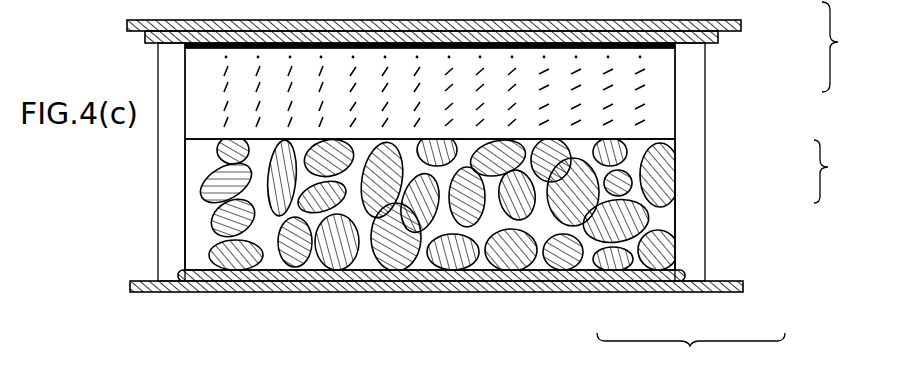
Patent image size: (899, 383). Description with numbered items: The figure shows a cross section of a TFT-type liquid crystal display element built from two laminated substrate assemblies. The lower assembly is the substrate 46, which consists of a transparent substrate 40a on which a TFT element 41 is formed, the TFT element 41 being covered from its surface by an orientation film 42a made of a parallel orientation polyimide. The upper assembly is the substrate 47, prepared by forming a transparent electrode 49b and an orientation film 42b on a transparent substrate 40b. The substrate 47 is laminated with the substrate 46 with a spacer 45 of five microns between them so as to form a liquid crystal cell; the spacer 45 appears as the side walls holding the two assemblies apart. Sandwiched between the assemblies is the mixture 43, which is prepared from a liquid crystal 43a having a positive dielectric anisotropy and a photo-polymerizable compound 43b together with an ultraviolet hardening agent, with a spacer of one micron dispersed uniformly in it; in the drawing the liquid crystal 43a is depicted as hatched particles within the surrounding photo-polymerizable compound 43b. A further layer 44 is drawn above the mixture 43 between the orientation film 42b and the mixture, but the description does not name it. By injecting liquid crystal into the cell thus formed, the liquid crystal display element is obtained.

The transparent substrate 40a is at (720, 294).
The transparent substrate 40b is at (741, 25).
The TFT element 41 is at (253, 293).
The orientation film 42a is at (668, 293).
The orientation film 42b is at (700, 46).
The mixture 43 is at (524, 202).
The liquid crystal 43a is at (642, 200).
The photo-polymerizable compound 43b is at (668, 222).
The intermediate layer 44 is at (660, 102).
The spacer 45 is at (697, 243).
The substrate 46 is at (691, 355).
The substrate 47 is at (848, 47).
The transparent electrode 49b is at (717, 37).